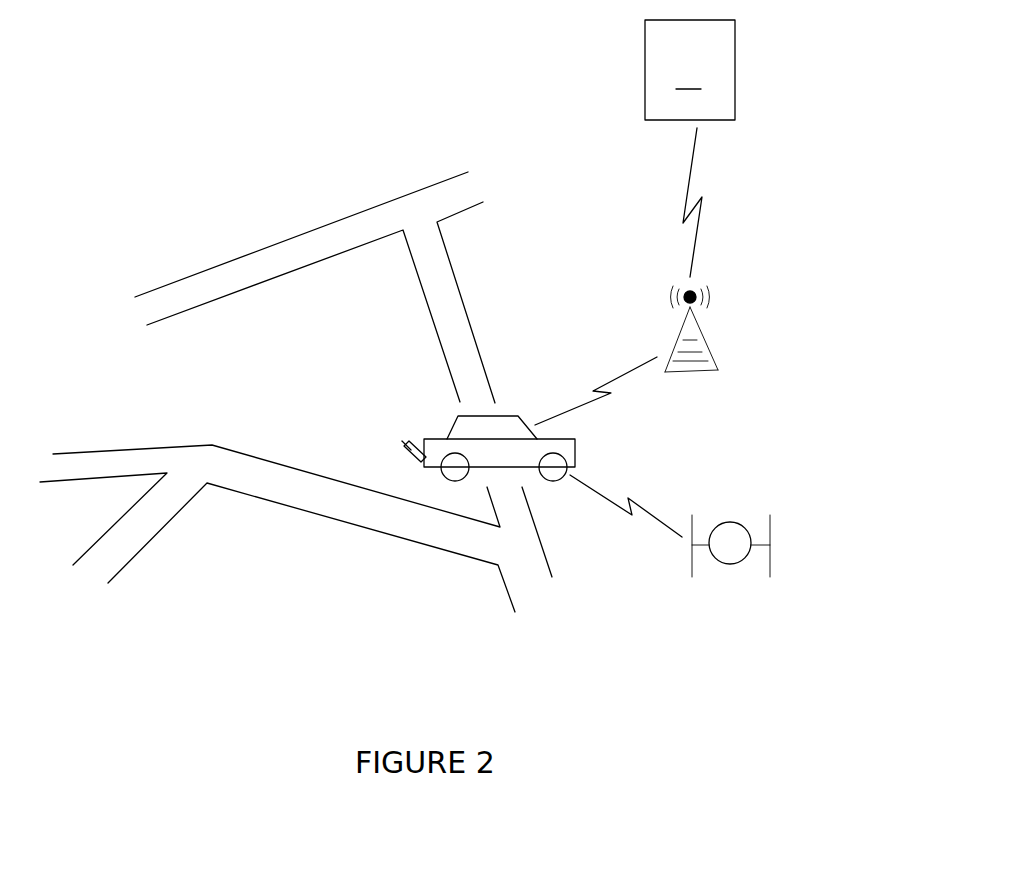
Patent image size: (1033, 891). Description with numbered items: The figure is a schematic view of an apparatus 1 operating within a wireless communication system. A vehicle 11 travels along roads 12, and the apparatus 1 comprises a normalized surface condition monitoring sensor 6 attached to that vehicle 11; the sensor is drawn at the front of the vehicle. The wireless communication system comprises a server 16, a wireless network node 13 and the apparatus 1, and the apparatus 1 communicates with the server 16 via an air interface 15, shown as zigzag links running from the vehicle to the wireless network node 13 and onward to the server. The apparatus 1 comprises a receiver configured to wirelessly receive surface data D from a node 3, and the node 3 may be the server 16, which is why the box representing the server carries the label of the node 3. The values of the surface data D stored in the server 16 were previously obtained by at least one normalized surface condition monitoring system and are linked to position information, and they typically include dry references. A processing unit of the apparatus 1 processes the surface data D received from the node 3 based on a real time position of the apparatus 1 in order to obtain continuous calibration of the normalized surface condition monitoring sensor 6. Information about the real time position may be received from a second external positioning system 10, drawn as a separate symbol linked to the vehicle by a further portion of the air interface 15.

The apparatus 1 is at (449, 402).
The node 3 is at (688, 71).
The normalized surface condition monitoring sensor 6 is at (408, 443).
The second external positioning system 10 is at (730, 565).
The vehicle 11 is at (447, 428).
The roads 12 is at (462, 348).
The wireless network node 13 is at (705, 348).
The air interface 15 is at (572, 402).
The server 16 is at (621, 70).
The surface data D is at (617, 421).